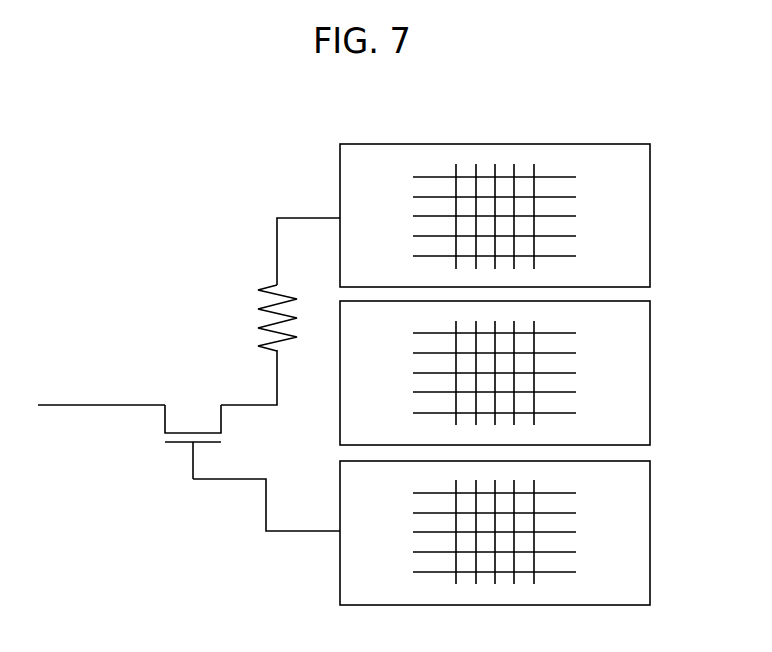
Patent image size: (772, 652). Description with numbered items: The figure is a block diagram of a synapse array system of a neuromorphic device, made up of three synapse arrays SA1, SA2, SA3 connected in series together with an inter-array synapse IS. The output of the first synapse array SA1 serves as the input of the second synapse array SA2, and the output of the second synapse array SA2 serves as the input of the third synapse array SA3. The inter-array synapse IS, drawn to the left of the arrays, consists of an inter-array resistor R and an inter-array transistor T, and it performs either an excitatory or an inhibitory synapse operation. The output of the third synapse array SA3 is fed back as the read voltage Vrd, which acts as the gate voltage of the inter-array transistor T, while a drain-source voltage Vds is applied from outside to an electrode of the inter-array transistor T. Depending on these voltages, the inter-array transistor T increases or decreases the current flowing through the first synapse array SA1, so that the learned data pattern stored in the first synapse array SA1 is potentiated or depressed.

The first synapse array SA1 is at (650, 215).
The second synapse array SA2 is at (650, 372).
The third synapse array SA3 is at (650, 532).
The inter-array synapse IS is at (140, 303).
The inter-array resistor R is at (245, 332).
The inter-array transistor T is at (181, 397).
The drain-source voltage Vds is at (101, 392).
The read voltage Vrd is at (175, 460).